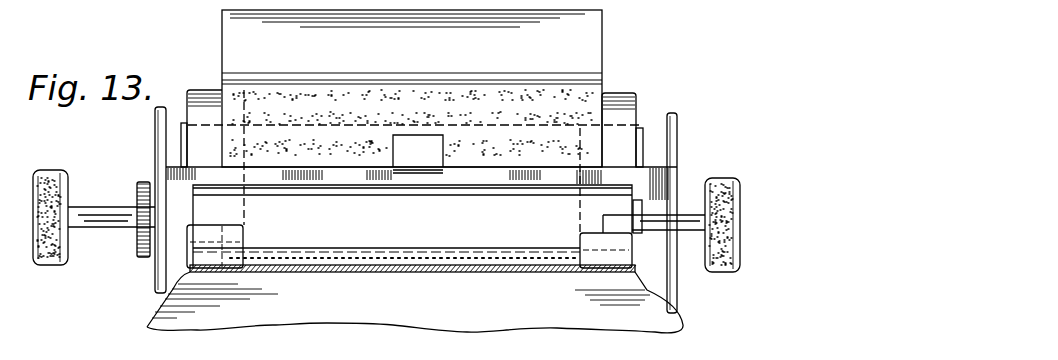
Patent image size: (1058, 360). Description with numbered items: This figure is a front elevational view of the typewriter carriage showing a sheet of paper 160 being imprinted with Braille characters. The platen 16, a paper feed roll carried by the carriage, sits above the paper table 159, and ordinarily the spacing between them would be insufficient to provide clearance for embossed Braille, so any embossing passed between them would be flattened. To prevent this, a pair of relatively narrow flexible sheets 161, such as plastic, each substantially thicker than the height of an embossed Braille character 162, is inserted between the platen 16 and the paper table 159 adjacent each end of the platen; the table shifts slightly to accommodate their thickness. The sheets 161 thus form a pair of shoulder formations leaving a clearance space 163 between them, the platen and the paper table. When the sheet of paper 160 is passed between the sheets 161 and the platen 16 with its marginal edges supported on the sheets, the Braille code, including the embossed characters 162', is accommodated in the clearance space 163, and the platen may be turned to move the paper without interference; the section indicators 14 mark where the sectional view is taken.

The section line of FIG. 14 is at (425, 52).
The platen 16 is at (412, 226).
The paper table 159 is at (333, 273).
The sheet of paper 160 is at (412, 91).
The flexible sheets 161 is at (200, 106).
The embossed Braille character 162 is at (412, 113).
The perforated bands 162' is at (411, 103).
The clearance space 163 is at (510, 262).